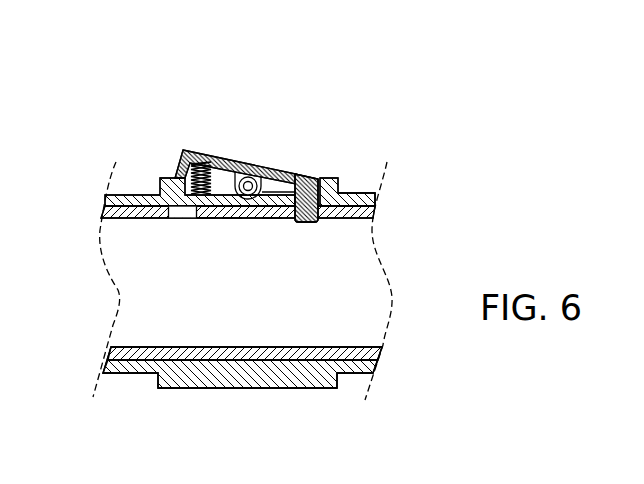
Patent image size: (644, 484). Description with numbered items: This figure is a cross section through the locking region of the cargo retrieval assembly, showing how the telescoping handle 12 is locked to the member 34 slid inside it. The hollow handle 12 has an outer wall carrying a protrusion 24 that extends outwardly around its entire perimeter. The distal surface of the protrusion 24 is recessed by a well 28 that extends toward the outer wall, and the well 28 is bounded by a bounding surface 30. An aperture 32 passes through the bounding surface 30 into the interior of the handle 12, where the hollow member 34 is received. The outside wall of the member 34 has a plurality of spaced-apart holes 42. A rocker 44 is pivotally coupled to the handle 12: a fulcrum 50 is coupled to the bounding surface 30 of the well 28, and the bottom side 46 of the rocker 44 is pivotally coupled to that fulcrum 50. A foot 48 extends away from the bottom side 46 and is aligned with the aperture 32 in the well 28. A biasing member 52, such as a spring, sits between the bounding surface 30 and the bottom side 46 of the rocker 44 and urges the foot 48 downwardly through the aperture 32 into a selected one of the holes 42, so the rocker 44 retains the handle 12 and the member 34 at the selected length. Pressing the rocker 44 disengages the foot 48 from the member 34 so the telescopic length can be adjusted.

The handle 12 is at (126, 195).
The protrusion 24 is at (340, 193).
The well 28 is at (278, 180).
The bounding surface 30 is at (229, 195).
The aperture 32 is at (312, 226).
The member 34 is at (355, 193).
The holes 42 is at (177, 198).
The rocker 44 is at (253, 195).
The bottom side 46 is at (232, 219).
The foot 48 is at (312, 223).
The fulcrum 50 is at (272, 219).
The biasing member 52 is at (207, 219).